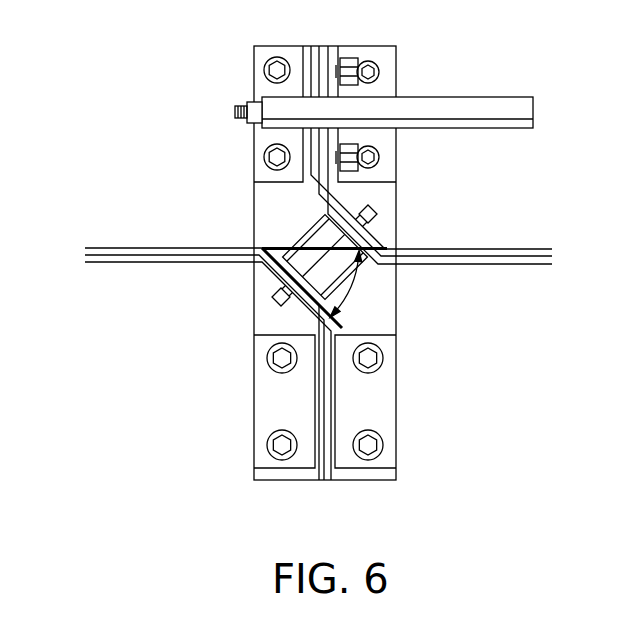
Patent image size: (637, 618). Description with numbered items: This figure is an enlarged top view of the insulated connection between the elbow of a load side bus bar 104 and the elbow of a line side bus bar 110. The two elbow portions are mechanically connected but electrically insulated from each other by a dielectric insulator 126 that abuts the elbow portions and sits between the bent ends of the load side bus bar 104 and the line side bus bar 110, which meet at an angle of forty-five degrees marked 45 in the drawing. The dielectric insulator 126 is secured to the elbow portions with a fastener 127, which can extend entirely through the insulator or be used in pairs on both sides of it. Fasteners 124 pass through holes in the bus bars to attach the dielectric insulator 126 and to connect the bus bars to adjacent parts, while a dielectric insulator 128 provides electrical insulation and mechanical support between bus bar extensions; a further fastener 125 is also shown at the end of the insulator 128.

The load side bus bar 104 is at (487, 250).
The line side bus bar 110 is at (158, 255).
The fastener 124 is at (383, 362).
The threaded fastener 125 is at (237, 103).
The dielectric insulator 126 is at (313, 240).
The fastener 127 is at (375, 216).
The dielectric insulator 128 is at (437, 97).
The 45 degree angle 45 is at (355, 283).